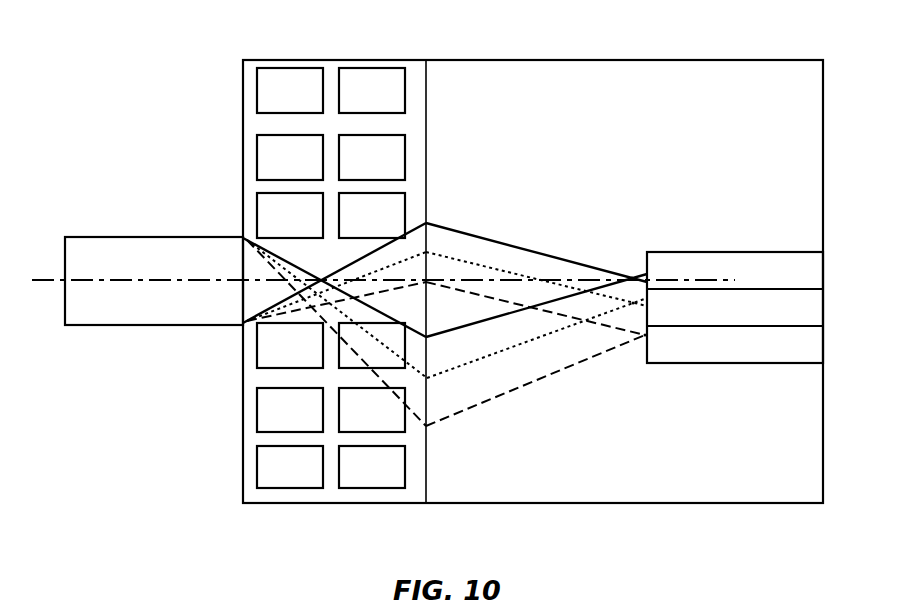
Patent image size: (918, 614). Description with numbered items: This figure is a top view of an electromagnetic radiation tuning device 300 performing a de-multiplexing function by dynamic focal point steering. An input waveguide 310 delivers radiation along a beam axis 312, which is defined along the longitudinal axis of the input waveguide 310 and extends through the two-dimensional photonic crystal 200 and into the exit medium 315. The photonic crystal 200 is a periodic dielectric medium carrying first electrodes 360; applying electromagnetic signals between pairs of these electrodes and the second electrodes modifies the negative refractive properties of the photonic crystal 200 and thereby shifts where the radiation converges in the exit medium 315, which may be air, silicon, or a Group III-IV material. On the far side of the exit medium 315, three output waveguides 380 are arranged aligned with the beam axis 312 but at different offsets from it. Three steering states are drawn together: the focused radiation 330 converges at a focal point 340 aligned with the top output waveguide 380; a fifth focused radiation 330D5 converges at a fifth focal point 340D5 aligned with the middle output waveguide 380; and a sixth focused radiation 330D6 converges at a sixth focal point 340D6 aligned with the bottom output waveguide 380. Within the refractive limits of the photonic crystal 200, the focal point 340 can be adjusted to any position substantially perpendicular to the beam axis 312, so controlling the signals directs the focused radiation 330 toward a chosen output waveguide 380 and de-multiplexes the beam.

The electromagnetic radiation tuning device 300 is at (113, 88).
The 2D photonic crystal 200 is at (342, 60).
The exit medium 315 is at (541, 60).
The input waveguide 310 is at (161, 325).
The beam axis 312 is at (55, 280).
The focused radiation 330 is at (428, 222).
The fifth focused radiation 330D5 is at (472, 262).
The sixth focused radiation 330D6 is at (490, 296).
The focal point 340 is at (633, 275).
The fifth focal point 340D5 is at (630, 303).
The sixth focal point 340D6 is at (647, 337).
The first electrodes 360 is at (372, 488).
The output waveguides 380 is at (823, 272).